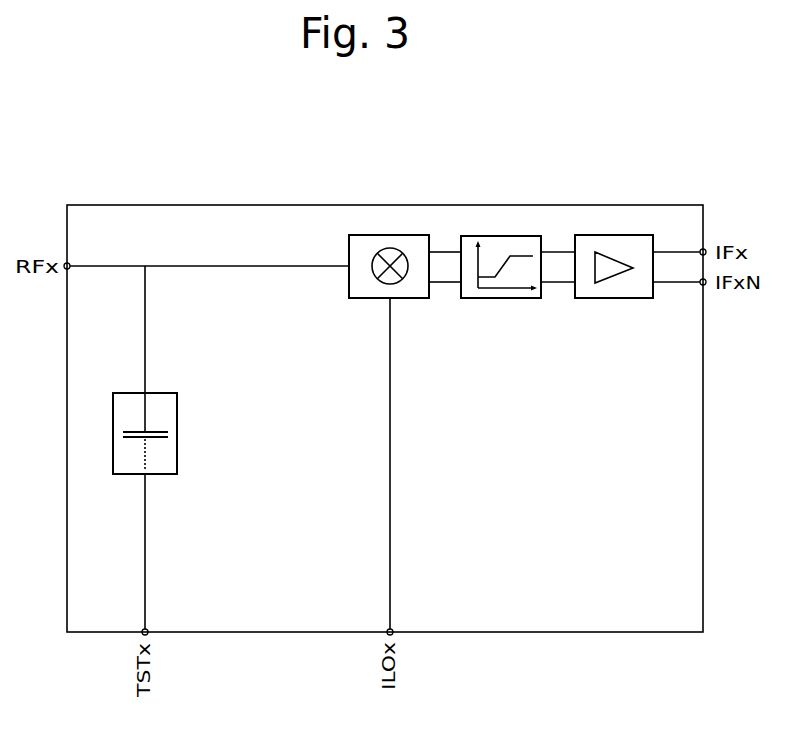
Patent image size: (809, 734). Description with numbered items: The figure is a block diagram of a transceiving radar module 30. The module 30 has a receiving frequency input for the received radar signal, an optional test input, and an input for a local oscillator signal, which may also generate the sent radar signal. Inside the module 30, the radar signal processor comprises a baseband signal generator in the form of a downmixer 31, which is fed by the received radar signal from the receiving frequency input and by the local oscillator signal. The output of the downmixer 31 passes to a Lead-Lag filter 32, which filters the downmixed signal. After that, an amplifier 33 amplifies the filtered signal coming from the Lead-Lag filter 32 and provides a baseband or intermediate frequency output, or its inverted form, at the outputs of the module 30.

The transceiving radar module 30 is at (187, 205).
The downmixer 31 is at (400, 230).
The Lead-Lag filter 32 is at (507, 235).
The amplifier 33 is at (620, 235).